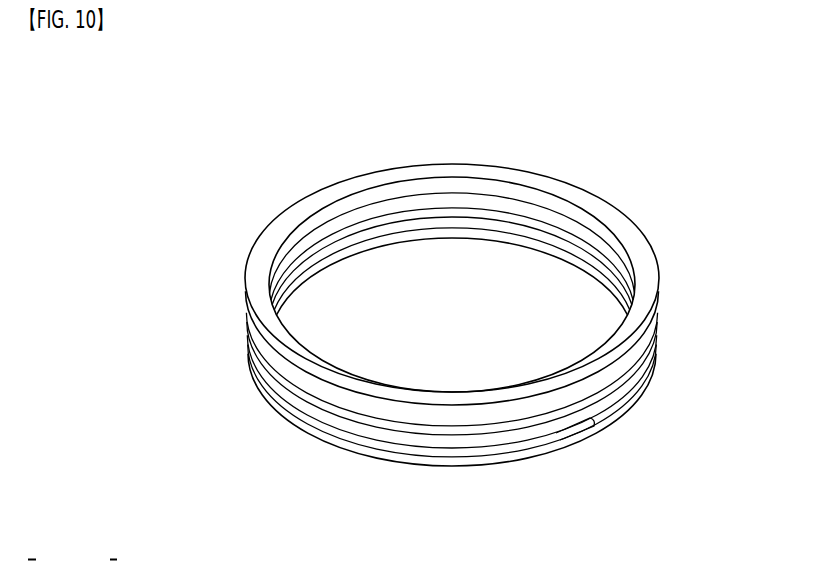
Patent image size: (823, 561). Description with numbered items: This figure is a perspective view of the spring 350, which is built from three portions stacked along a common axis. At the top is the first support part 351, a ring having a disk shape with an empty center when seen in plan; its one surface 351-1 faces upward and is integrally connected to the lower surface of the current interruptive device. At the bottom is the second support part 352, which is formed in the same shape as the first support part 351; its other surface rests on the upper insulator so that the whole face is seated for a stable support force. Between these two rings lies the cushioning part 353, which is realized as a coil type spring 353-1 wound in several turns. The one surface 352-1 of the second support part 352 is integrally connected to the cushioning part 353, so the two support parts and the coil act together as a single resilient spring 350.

The spring 350 is at (293, 171).
The first support part 351 is at (657, 257).
The one surface 351-1 is at (625, 228).
The second support part 352 is at (602, 427).
The one surface 352-1 is at (627, 397).
The cushioning part 353 is at (670, 277).
The coil type spring 353-1 is at (635, 360).